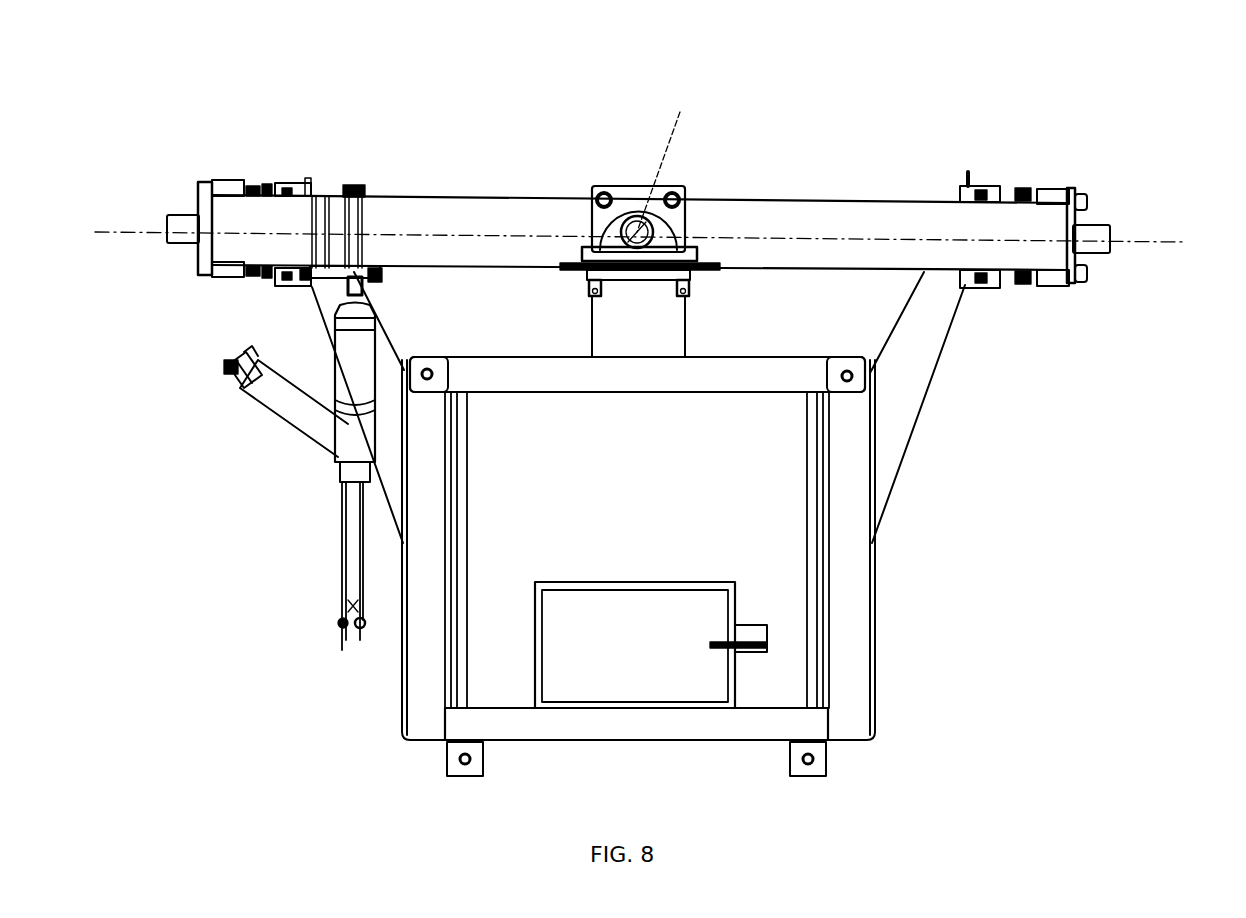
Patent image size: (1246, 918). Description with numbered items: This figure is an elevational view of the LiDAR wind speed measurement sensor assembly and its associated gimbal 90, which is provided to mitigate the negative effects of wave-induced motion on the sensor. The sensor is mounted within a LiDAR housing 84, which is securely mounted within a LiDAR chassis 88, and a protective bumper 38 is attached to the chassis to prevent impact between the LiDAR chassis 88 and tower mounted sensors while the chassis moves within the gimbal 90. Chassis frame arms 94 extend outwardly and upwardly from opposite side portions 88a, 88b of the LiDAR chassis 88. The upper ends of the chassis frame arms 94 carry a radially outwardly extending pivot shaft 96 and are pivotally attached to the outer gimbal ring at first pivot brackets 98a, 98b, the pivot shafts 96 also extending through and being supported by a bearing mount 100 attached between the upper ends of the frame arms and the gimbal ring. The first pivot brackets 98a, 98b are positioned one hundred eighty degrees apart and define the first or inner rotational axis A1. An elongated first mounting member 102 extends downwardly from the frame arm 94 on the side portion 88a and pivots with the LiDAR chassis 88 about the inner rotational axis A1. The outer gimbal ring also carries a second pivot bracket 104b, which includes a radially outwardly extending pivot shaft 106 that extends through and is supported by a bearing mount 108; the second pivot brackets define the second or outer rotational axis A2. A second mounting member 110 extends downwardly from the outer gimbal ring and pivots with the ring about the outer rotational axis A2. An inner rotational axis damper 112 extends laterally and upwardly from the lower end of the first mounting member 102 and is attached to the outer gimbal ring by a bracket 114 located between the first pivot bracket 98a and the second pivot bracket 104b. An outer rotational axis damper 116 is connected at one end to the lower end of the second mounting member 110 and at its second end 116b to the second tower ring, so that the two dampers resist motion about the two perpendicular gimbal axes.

The gimbal 90 is at (300, 88).
The pivot shaft 96 is at (180, 242).
The first pivot bracket 98a is at (200, 185).
The first pivot bracket 98b is at (1058, 188).
The bearing mount 100 is at (262, 280).
The bracket 114 is at (360, 196).
The second pivot bracket 104b is at (620, 188).
The bearing mount 108 is at (660, 230).
The pivot shaft 106 is at (700, 268).
The second mounting member 110 is at (598, 322).
The chassis frame arms 94 is at (398, 342).
The inner rotational axis damper 112 is at (340, 440).
The first mounting member 102 is at (343, 546).
The outer rotational axis damper 116 is at (290, 440).
The second end 116b is at (234, 388).
The LiDAR chassis 88 is at (505, 745).
The side portion 88a is at (402, 736).
The side portion 88b is at (875, 722).
The protective bumper 38 is at (748, 735).
The LiDAR housing 84 is at (780, 590).
The inner rotational axis A1 is at (1160, 240).
The outer rotational axis A2 is at (679, 162).